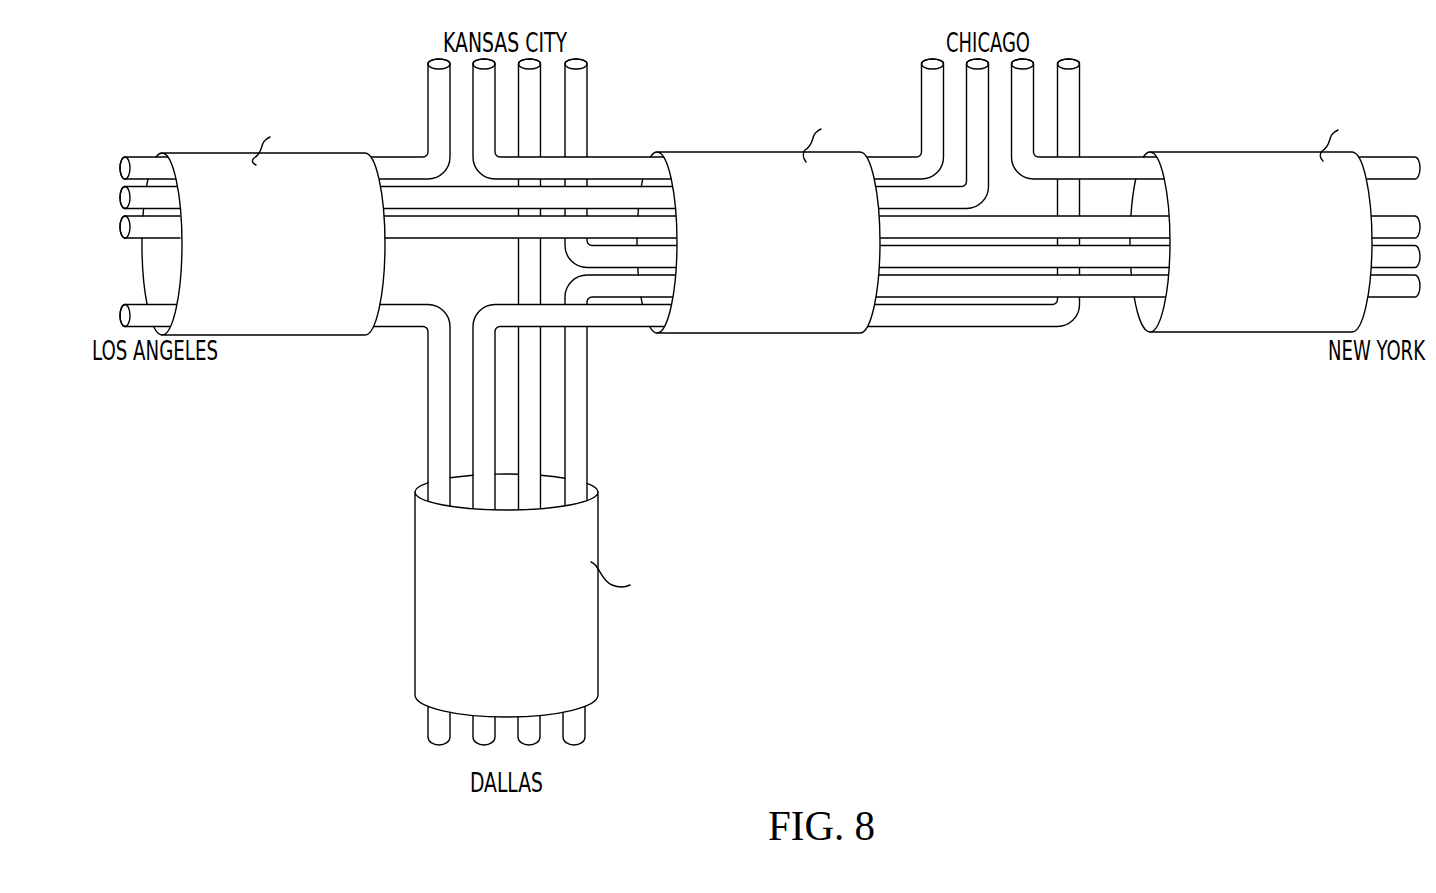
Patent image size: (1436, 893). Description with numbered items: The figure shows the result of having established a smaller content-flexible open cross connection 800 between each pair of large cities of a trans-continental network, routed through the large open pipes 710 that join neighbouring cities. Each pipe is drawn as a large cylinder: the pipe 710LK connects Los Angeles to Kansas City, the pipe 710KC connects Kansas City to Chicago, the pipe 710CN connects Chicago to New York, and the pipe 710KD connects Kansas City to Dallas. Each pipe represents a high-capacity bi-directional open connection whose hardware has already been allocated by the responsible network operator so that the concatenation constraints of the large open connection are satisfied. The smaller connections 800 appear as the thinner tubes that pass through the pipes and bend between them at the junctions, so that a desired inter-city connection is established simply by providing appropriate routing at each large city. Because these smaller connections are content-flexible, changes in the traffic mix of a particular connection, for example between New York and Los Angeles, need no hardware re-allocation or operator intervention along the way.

The OP-X connection 800 is at (436, 90).
The pipes 710 is at (757, 410).
The pipe 710LK is at (283, 258).
The pipe 710KC is at (777, 257).
The pipe 710CN is at (1270, 257).
The pipe 710KD is at (512, 617).